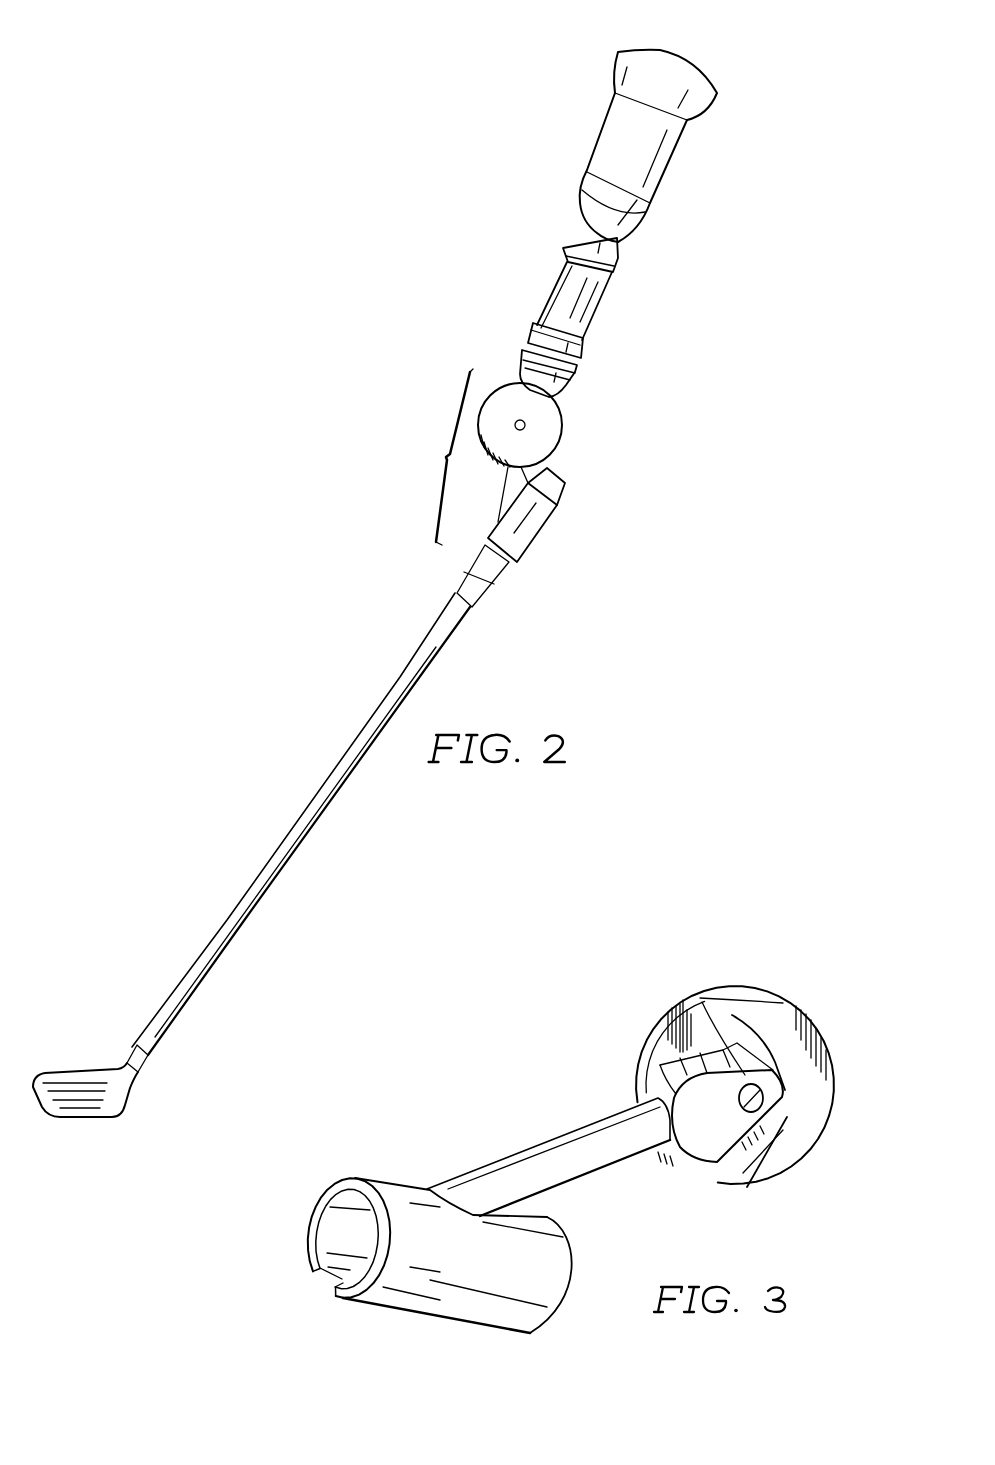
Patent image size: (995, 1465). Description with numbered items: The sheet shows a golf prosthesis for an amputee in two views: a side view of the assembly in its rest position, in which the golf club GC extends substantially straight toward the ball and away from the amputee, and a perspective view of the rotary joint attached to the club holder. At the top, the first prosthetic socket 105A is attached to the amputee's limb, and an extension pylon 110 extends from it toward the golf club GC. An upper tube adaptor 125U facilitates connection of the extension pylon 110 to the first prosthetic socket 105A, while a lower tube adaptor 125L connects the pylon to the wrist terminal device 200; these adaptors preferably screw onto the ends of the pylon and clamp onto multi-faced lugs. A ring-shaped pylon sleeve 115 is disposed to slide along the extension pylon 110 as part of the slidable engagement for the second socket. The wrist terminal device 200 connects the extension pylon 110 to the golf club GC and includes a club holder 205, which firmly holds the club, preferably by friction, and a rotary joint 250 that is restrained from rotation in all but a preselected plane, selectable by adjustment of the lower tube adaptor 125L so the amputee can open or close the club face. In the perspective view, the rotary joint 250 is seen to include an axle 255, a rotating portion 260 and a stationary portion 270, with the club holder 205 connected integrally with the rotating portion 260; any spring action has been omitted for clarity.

In FIG. 2, the first prosthetic socket 105A is at (600, 138).
In FIG. 2, the upper tube adaptor 125U is at (563, 250).
In FIG. 2, the extension pylon 110 is at (605, 290).
In FIG. 2, the pylon sleeve 115 is at (587, 349).
In FIG. 2, the lower tube adaptor 125L is at (517, 354).
In FIG. 2, the rotary joint 250 is at (566, 424).
In FIG. 3, the rotary joint 250 is at (837, 975).
In FIG. 2, the wrist terminal device 200 is at (447, 456).
In FIG. 3, the wrist terminal device 200 is at (532, 1089).
In FIG. 2, the club holder 205 is at (540, 532).
In FIG. 3, the club holder 205 is at (552, 1314).
In FIG. 2, the golf club GC is at (307, 829).
In FIG. 3, the axle 255 is at (760, 1103).
In FIG. 3, the rotating portion 260 is at (690, 1142).
In FIG. 3, the stationary portion 270 is at (772, 1168).